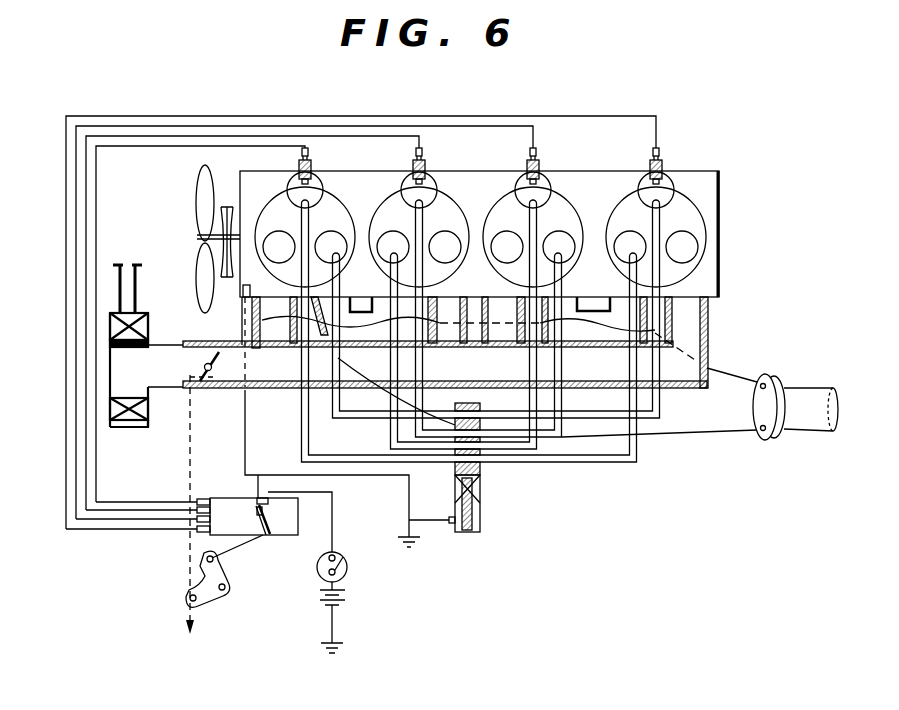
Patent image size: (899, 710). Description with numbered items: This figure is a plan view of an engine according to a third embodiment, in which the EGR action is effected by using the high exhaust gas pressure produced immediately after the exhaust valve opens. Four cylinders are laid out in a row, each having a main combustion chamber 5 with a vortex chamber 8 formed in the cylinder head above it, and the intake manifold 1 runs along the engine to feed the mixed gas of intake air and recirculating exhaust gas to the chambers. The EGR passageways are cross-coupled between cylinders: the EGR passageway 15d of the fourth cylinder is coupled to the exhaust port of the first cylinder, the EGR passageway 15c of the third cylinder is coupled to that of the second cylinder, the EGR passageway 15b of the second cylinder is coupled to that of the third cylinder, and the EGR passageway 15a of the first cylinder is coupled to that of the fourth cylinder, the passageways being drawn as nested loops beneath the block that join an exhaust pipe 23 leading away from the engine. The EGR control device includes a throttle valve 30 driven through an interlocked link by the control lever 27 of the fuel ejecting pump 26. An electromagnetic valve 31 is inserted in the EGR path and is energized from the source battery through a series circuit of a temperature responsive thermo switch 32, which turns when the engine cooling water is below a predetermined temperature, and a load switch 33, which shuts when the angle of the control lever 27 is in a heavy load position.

The intake manifold 1 is at (268, 372).
The main combustion chamber 5 is at (448, 212).
The vortex chamber 8 is at (432, 180).
The EGR passageway of #1 cylinder 15a is at (535, 452).
The EGR passageway of #2 cylinder 15b is at (552, 434).
The EGR passageway of #3 cylinder 15c is at (442, 453).
The EGR passageway of #4 cylinder 15d is at (658, 368).
The exhaust manifold pipe 23 is at (733, 376).
The fuel ejecting pump 26 is at (285, 523).
The control lever 27 is at (262, 540).
The throttle valve 30 is at (213, 392).
The electromagnetic valve 31 is at (480, 493).
The thermo switch 32 is at (242, 292).
The load switch 33 is at (270, 505).